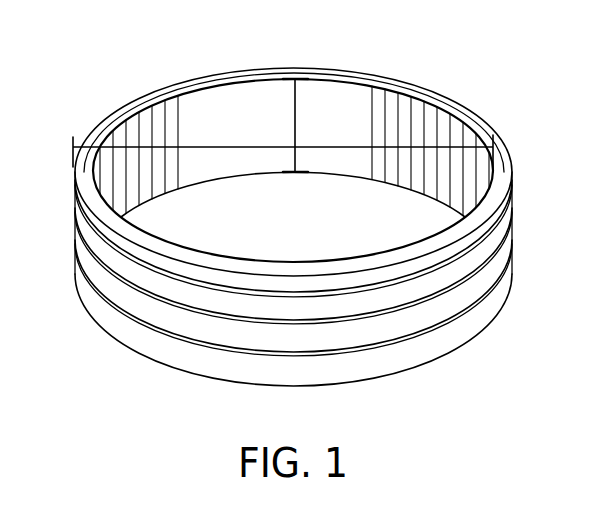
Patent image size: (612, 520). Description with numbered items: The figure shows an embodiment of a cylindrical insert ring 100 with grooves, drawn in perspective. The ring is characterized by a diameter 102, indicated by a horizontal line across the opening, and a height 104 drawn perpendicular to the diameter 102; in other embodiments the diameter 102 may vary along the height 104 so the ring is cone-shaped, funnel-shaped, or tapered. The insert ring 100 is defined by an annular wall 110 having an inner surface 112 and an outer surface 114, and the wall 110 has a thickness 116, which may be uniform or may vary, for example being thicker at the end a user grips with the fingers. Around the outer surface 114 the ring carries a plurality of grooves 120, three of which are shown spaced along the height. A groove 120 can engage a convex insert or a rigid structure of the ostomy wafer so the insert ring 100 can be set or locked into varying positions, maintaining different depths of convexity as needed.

The insert ring 100 is at (90, 52).
The diameter 102 is at (258, 145).
The height 104 is at (298, 116).
The annular wall 110 is at (152, 97).
The inner surface 112 is at (215, 100).
The outer surface 114 is at (78, 250).
The thickness 116 is at (100, 147).
The groove 120 is at (514, 192).